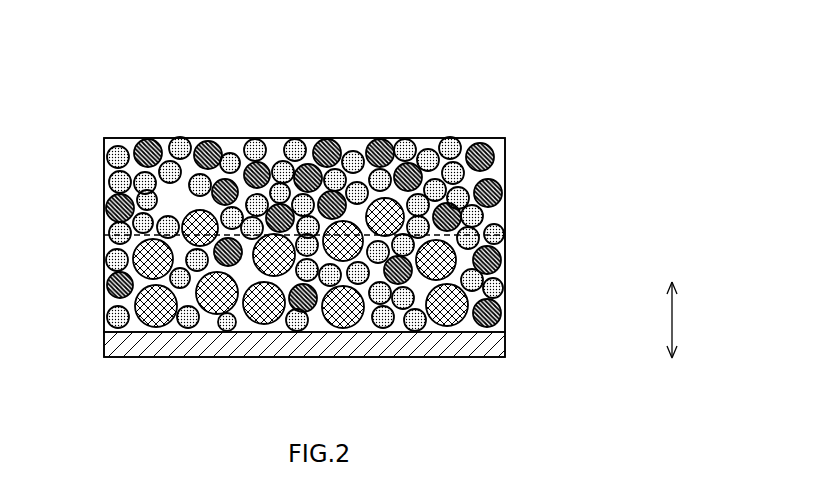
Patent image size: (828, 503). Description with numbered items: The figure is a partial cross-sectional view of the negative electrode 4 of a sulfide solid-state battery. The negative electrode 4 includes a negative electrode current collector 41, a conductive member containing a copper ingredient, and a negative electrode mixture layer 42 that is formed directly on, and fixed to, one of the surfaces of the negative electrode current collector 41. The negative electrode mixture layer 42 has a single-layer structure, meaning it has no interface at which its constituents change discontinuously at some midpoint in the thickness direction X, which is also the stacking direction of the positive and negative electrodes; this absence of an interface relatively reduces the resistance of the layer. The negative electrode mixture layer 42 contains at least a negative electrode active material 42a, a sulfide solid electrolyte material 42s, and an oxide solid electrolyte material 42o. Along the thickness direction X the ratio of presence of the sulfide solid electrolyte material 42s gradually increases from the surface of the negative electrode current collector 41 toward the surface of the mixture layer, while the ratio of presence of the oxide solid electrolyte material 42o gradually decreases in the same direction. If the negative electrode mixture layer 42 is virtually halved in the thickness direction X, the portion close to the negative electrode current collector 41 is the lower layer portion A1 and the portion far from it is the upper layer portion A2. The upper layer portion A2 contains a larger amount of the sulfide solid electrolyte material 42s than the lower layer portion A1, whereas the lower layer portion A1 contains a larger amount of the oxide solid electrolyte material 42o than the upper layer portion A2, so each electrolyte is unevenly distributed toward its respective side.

The negative electrode 4 is at (610, 60).
The negative electrode current collector 41 is at (505, 352).
The negative electrode mixture layer 42 is at (371, 205).
The negative electrode active material 42a is at (181, 138).
The sulfide solid electrolyte material 42s is at (325, 138).
The oxide solid electrolyte material 42o is at (399, 138).
The lower layer portion A1 is at (522, 235).
The upper layer portion A2 is at (522, 138).
The thickness direction X is at (683, 320).